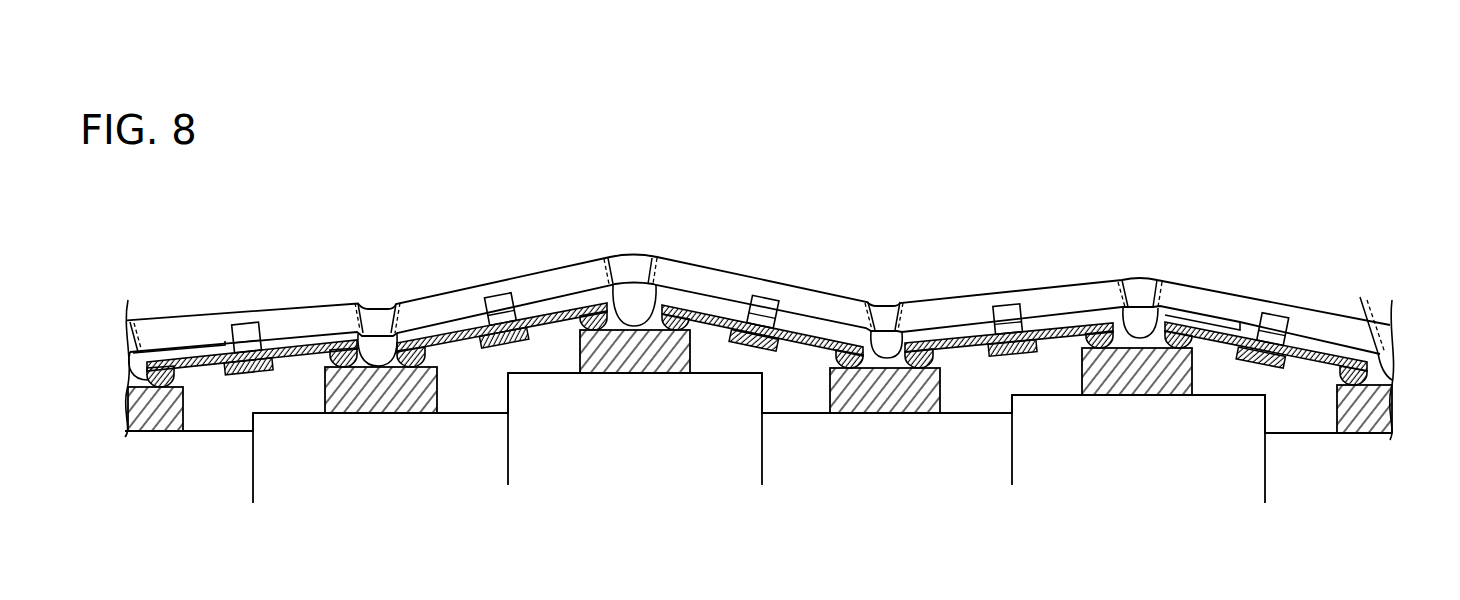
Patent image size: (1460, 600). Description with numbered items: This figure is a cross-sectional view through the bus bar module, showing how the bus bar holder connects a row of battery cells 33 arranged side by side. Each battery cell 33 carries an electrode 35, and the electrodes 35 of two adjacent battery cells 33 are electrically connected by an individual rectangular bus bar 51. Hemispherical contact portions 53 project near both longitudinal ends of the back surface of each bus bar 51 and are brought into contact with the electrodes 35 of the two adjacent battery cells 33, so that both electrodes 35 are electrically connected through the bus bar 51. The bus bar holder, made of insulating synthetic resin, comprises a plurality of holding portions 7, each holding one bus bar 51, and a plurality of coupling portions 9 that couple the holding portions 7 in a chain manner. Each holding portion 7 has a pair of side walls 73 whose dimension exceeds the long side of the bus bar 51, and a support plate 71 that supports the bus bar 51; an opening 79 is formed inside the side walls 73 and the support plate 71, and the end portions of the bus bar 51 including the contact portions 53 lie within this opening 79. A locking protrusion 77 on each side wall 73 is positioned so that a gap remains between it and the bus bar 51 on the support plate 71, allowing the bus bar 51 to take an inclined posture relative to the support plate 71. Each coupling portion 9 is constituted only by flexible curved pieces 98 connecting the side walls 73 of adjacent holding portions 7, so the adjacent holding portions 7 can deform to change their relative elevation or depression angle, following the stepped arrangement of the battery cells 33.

The holding portion 7 is at (247, 311).
The coupling portion 9 is at (376, 300).
The battery cell 33 is at (197, 430).
The electrode 35 is at (160, 413).
The bus bar 51 is at (202, 357).
The contact portion 53 is at (136, 362).
The support plate 71 is at (1020, 357).
The side wall 73 is at (975, 303).
The locking protrusion 77 is at (1008, 303).
The opening 79 is at (302, 368).
The curved piece 98 is at (1130, 290).